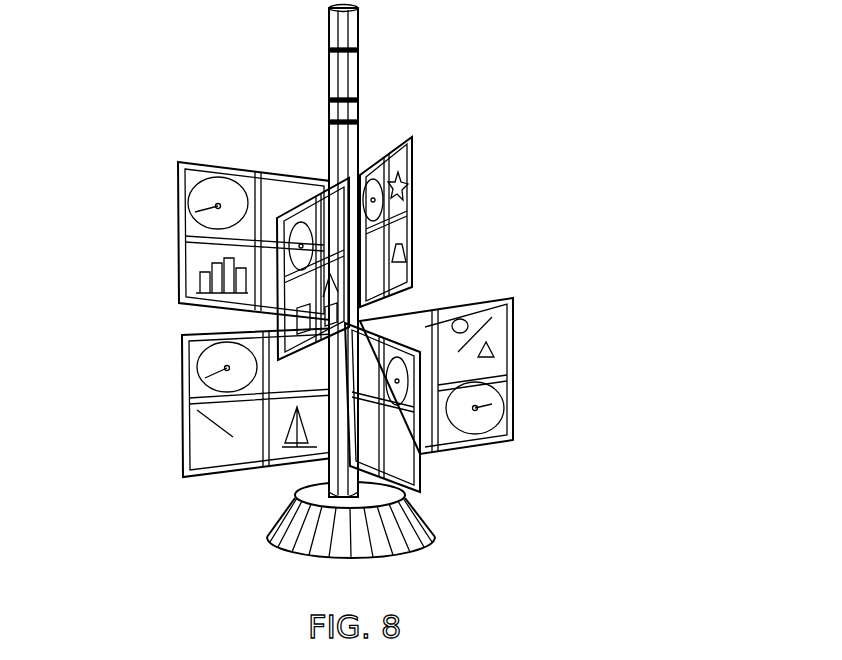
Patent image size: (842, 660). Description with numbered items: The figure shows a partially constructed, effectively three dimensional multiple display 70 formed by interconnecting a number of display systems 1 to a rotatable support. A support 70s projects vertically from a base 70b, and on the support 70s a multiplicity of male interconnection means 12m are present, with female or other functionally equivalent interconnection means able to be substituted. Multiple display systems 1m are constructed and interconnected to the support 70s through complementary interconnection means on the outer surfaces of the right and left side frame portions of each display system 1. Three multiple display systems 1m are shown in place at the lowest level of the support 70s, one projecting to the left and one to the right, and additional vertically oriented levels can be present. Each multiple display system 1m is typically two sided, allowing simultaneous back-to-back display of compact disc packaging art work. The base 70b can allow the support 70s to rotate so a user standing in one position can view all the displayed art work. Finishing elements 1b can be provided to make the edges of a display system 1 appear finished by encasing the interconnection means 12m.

The three dimensional multiple display 70 is at (345, 282).
The support 70s is at (425, 251).
The base 70b is at (402, 535).
The male interconnection means 12m is at (358, 97).
The display system 1 is at (345, 251).
The multiple display system 1m is at (188, 328).
The finishing elements 1b is at (182, 440).